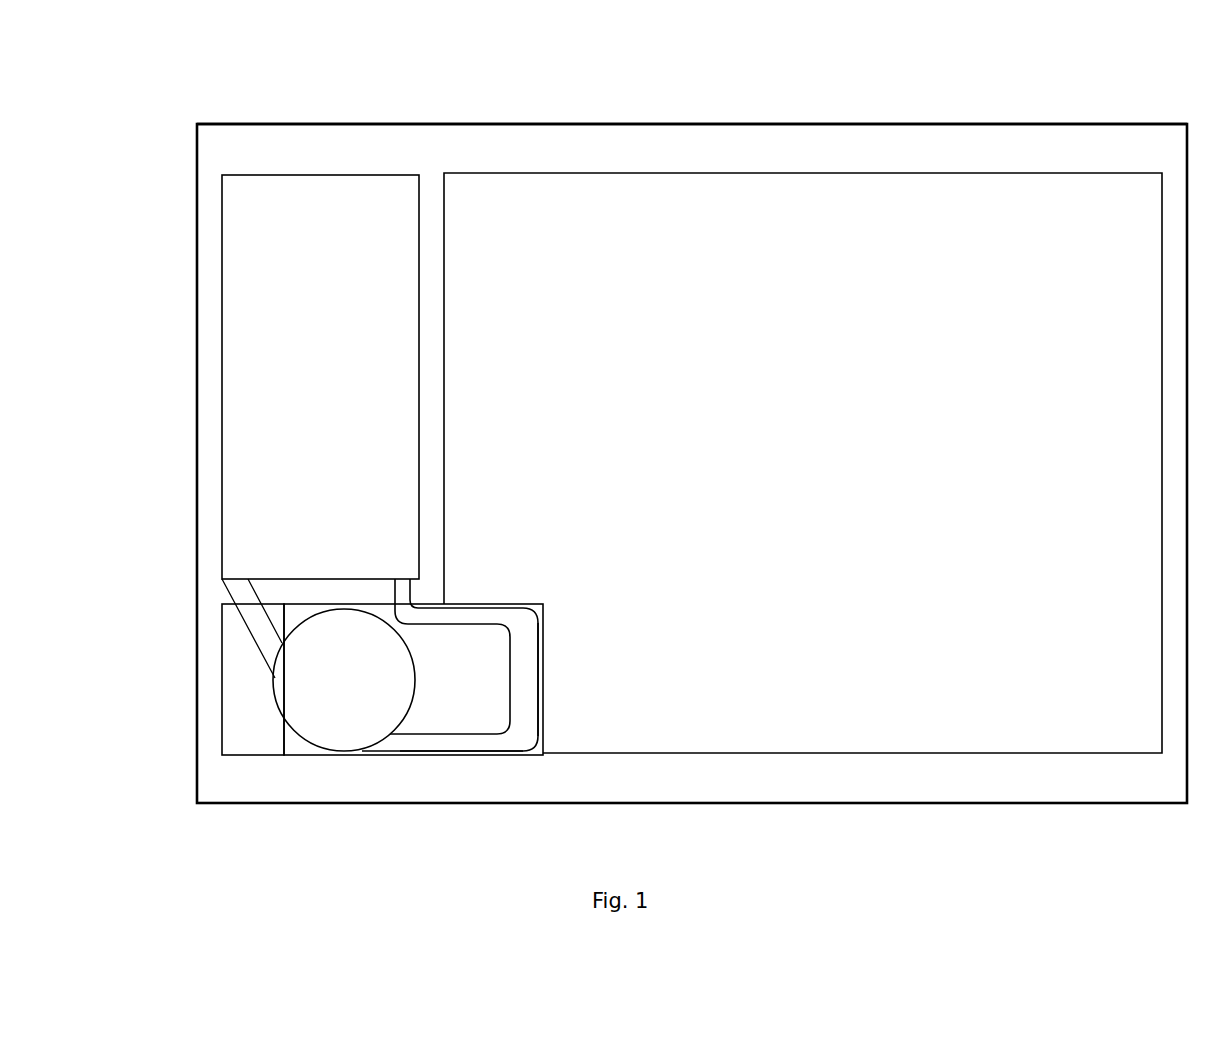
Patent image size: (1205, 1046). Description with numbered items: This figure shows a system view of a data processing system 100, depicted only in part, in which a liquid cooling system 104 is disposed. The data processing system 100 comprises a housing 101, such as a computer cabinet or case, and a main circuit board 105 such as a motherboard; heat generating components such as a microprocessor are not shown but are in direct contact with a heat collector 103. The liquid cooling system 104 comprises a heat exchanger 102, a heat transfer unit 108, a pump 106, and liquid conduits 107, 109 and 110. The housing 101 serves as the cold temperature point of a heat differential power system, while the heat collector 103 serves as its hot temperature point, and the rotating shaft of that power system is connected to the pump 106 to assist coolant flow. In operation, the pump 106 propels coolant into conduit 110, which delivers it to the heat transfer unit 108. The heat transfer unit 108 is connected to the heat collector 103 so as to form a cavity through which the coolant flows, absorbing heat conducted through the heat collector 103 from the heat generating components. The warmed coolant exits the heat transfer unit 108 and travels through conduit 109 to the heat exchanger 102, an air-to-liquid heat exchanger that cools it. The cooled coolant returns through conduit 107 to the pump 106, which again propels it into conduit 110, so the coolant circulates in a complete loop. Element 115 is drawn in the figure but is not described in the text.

The data processing system 100 is at (1059, 115).
The housing 101 is at (209, 123).
The heat exchanger 102 is at (221, 278).
The heat collector 103 is at (545, 607).
The liquid cooling system 104 is at (444, 680).
The main circuit board 105 is at (493, 173).
The pump 106 is at (305, 705).
The liquid conduit 107 is at (257, 598).
The heat transfer unit 108 is at (540, 698).
The liquid conduit 109 is at (469, 615).
The liquid conduit 110 is at (488, 742).
The pump housing 115 is at (221, 697).